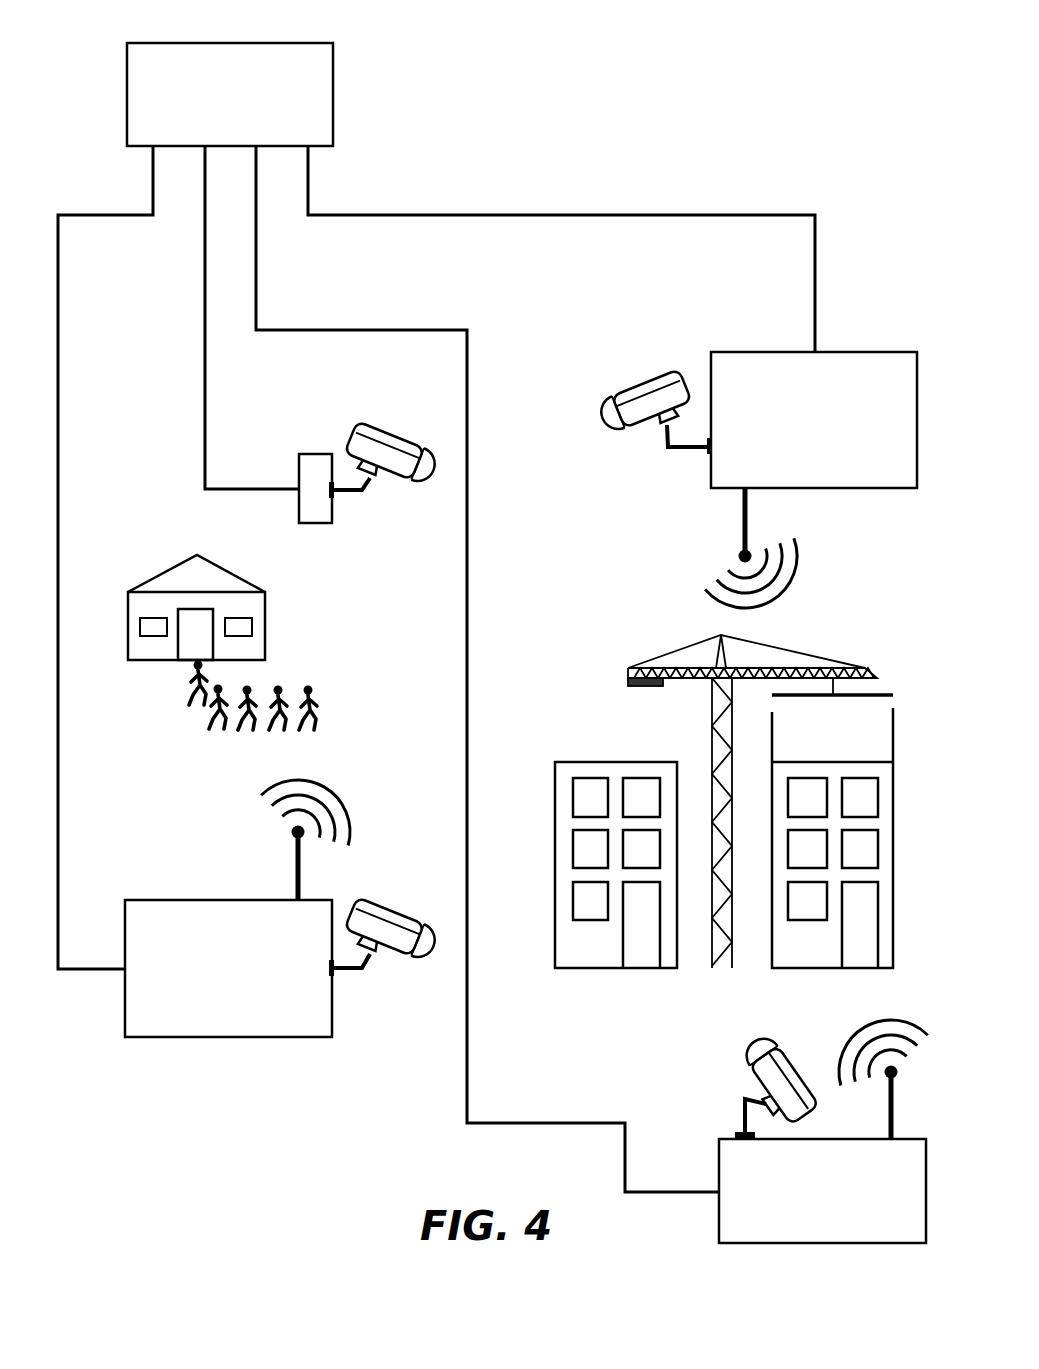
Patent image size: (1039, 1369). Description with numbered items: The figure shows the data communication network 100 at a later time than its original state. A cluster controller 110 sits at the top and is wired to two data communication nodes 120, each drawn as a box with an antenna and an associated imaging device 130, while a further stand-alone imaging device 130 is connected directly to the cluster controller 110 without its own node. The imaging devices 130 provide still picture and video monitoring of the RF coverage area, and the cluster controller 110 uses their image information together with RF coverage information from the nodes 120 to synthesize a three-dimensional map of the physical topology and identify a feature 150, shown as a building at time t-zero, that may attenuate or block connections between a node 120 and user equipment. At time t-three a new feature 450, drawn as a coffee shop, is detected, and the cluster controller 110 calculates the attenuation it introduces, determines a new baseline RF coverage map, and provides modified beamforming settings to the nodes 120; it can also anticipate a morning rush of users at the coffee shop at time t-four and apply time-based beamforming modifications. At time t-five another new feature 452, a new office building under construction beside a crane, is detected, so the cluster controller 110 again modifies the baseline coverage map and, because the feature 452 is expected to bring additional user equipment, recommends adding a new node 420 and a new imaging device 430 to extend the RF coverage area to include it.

The data communication network 100 is at (58, 1215).
The cluster controller 110 is at (135, 43).
The data communication node 120 is at (720, 352).
The imaging device 130 is at (404, 434).
The feature 150 is at (562, 762).
The new node 420 is at (926, 1127).
The new imaging device 430 is at (742, 1094).
The new feature 450 is at (240, 574).
The another new feature 452 is at (897, 711).